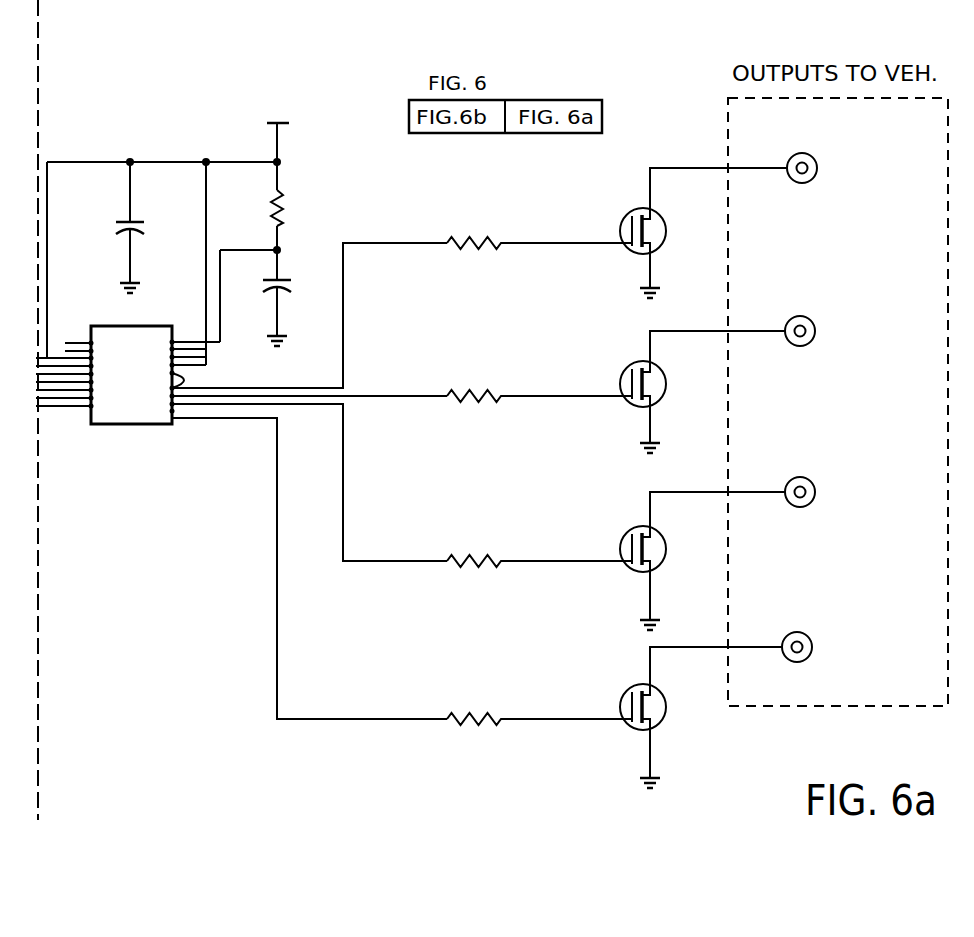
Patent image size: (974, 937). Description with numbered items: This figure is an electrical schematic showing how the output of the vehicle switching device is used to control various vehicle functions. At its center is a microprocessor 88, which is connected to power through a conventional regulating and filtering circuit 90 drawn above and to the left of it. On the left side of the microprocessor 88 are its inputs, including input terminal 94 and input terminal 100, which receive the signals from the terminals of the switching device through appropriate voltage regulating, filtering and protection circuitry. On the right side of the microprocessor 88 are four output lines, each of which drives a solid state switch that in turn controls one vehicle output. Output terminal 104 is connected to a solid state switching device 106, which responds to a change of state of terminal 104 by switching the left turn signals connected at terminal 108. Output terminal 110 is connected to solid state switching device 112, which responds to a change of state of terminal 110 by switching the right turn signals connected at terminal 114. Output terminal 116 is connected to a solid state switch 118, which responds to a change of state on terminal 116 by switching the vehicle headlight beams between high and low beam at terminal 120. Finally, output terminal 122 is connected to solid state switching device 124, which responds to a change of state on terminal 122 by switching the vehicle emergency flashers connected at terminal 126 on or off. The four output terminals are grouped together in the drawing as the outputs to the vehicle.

The microprocessor 88 is at (134, 404).
The regulating and filtering circuit 90 is at (172, 161).
The input terminal 94 is at (50, 383).
The input terminal 100 is at (60, 407).
The output terminal 104 is at (227, 386).
The solid state switching device 106 is at (630, 212).
The terminal 108 is at (803, 152).
The output terminal 110 is at (370, 396).
The solid state switching device 112 is at (630, 365).
The terminal 114 is at (803, 315).
The output terminal 116 is at (308, 407).
The solid state switch 118 is at (630, 530).
The terminal 120 is at (803, 476).
The output terminal 122 is at (237, 420).
The solid state switching device 124 is at (640, 684).
The terminal 126 is at (800, 631).